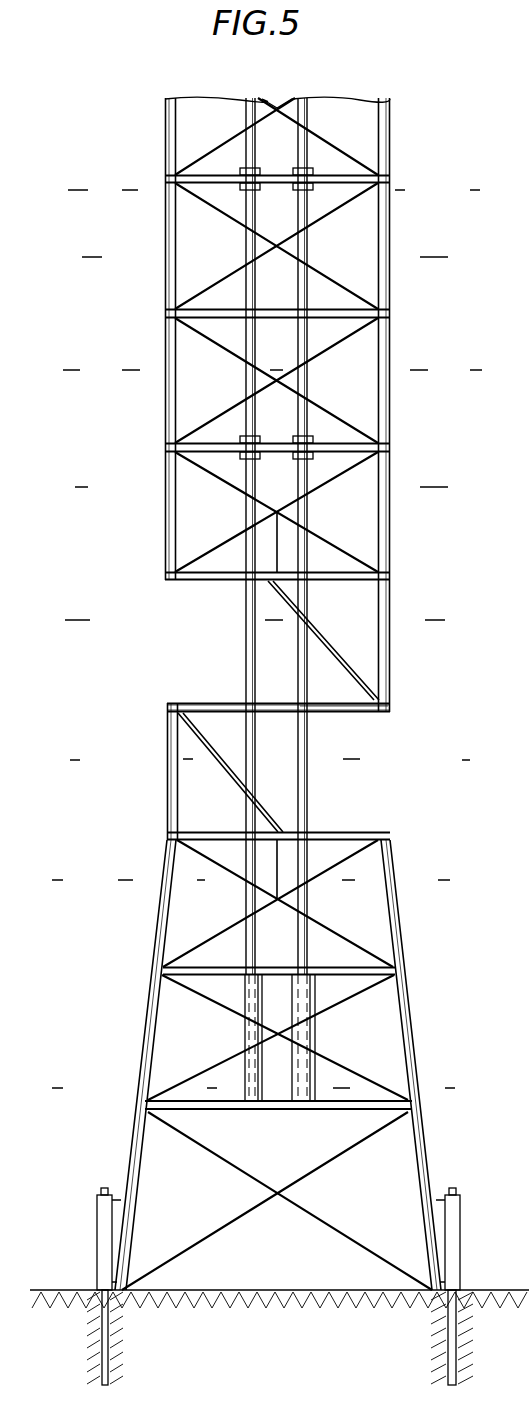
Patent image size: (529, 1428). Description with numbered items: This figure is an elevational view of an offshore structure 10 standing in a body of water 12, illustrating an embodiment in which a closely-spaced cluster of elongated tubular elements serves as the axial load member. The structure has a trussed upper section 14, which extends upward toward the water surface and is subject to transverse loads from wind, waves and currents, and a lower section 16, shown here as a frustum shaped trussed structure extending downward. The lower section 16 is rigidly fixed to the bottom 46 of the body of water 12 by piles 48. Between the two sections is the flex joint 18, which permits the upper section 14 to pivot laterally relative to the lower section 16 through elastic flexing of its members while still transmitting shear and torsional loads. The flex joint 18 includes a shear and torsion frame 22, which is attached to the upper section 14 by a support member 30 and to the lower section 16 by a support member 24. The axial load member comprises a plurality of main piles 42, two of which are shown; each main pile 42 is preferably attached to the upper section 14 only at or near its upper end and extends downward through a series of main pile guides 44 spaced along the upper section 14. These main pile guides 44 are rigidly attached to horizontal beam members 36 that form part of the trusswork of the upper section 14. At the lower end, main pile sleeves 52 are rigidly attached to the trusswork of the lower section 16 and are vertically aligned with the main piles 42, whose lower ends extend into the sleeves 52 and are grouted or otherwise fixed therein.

The offshore structure 10 is at (86, 515).
The body of water 12 is at (84, 323).
The upper section 14 is at (163, 152).
The lower section 16 is at (138, 1090).
The flex joint 18 is at (147, 690).
The shear and torsion frame 22 is at (363, 714).
The support member 24 is at (165, 727).
The support member 30 is at (395, 685).
The horizontal beam members 36 is at (200, 455).
The main piles 42 is at (243, 612).
The main pile guides 44 is at (257, 170).
The bottom of body of water 46 is at (100, 1288).
The piles 48 is at (110, 1360).
The main pile sleeves 52 is at (240, 1040).